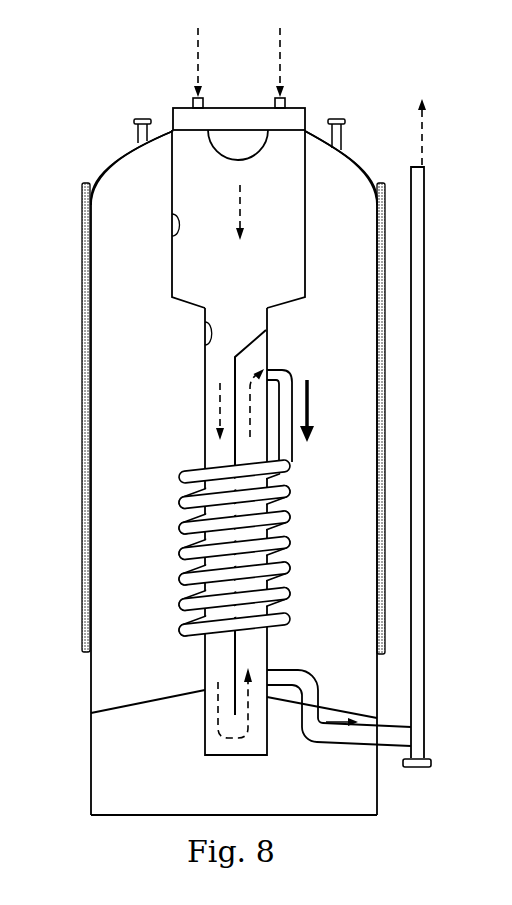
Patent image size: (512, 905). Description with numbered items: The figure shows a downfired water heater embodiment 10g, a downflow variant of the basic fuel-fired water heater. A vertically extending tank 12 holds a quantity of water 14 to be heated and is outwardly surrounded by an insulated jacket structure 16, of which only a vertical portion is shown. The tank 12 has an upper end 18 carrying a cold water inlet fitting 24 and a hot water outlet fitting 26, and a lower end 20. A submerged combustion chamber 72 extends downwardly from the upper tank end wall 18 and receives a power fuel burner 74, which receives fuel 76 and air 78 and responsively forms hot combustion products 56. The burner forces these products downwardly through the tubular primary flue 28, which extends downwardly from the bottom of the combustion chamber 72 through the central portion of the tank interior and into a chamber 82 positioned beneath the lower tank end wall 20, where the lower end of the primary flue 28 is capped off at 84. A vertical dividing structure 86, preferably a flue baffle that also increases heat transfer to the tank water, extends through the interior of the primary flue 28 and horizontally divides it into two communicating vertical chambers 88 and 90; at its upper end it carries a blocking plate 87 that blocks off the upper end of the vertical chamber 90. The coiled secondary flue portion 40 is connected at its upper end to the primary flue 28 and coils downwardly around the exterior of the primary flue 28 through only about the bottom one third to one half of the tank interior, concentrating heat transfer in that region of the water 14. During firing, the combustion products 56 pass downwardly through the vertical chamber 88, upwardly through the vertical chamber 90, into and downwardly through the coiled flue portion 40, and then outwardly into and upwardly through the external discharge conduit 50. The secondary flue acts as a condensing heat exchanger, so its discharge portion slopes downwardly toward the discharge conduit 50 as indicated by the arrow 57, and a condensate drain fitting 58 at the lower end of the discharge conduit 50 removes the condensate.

The water heater embodiment 10g is at (115, 75).
The tank 12 is at (86, 688).
The water 14 is at (156, 550).
The insulated jacket structure 16 is at (82, 484).
The upper end 18 is at (124, 146).
The lower end 20 is at (130, 713).
The cold water inlet fitting 24 is at (134, 122).
The hot water outlet fitting 26 is at (338, 118).
The primary flue 28 is at (206, 334).
The coiled secondary flue portion 40 is at (178, 608).
The discharge conduit 50 is at (426, 436).
The combustion products 56 is at (240, 212).
The downward slope arrow 57 is at (335, 715).
The condensate drain fitting 58 is at (416, 768).
The submerged combustion chamber 72 is at (172, 228).
The power fuel burner 74 is at (237, 108).
The fuel 76 is at (196, 55).
The air 78 is at (283, 55).
The chamber 82 is at (183, 793).
The cap 84 is at (235, 757).
The vertical dividing structure 86 is at (224, 663).
The blocking plate 87 is at (248, 343).
The vertical chamber 88 is at (212, 457).
The vertical chamber 90 is at (262, 353).